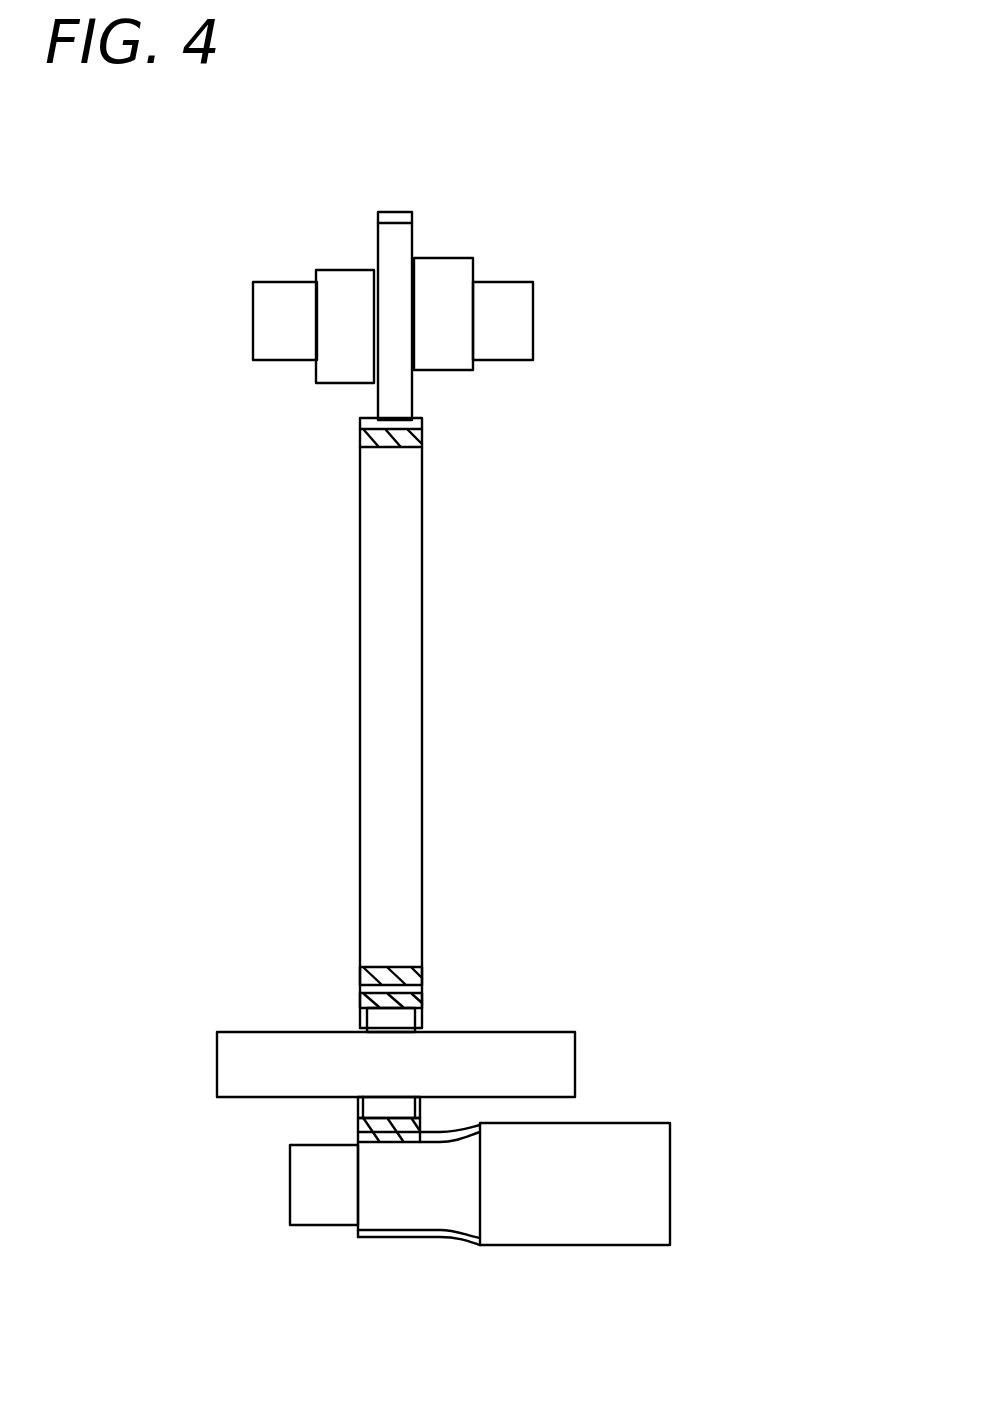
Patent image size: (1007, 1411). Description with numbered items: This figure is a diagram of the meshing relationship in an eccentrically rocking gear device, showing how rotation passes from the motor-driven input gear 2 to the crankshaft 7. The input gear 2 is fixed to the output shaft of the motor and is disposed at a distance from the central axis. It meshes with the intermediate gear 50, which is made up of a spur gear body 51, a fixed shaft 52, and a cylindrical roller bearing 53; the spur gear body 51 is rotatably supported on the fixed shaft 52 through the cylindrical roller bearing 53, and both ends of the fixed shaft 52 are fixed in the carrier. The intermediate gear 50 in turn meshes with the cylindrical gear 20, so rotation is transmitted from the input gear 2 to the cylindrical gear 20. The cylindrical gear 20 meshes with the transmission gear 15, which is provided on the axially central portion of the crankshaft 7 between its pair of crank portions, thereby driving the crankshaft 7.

The input gear 2 is at (620, 1133).
The crankshaft 7 is at (503, 288).
The transmission gear 15 is at (407, 238).
The cylindrical gear 20 is at (427, 433).
The intermediate gear 50 is at (267, 952).
The spur gear body 51 is at (422, 992).
The fixed shaft 52 is at (250, 1033).
The cylindrical roller bearing 53 is at (400, 1023).